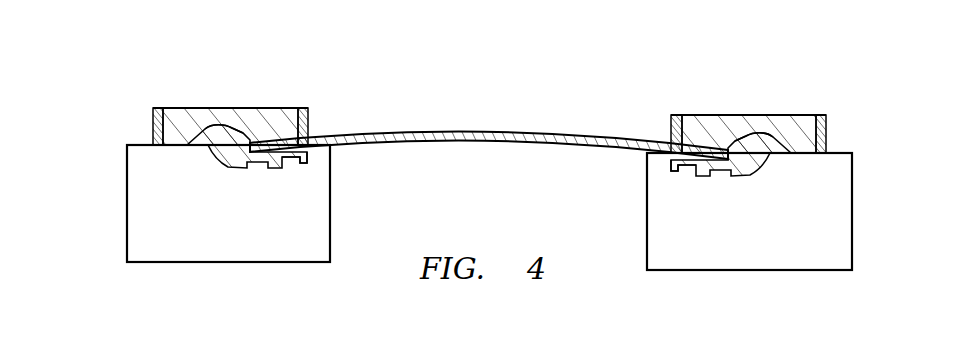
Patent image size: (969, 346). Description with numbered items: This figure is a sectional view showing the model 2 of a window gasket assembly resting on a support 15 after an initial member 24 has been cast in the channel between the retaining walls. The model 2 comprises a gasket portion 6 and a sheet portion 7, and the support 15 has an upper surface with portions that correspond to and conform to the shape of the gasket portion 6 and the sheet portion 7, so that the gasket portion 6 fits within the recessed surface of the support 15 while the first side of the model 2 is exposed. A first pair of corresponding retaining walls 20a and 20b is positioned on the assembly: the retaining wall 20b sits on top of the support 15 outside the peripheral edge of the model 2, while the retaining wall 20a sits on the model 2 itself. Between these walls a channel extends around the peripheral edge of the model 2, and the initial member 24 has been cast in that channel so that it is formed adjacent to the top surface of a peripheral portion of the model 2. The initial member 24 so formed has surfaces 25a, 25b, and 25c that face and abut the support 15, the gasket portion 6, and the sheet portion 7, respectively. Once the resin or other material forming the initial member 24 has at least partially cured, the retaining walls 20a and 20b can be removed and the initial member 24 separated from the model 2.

The model 2 is at (415, 118).
The gasket portion 6 is at (204, 109).
The sheet portion 7 is at (297, 152).
The support 15 is at (238, 240).
The retaining wall 20a is at (307, 109).
The retaining wall 20b is at (153, 109).
The initial member 24 is at (243, 110).
The surface 25a is at (175, 147).
The surface 25b is at (217, 150).
The surface 25c is at (278, 128).